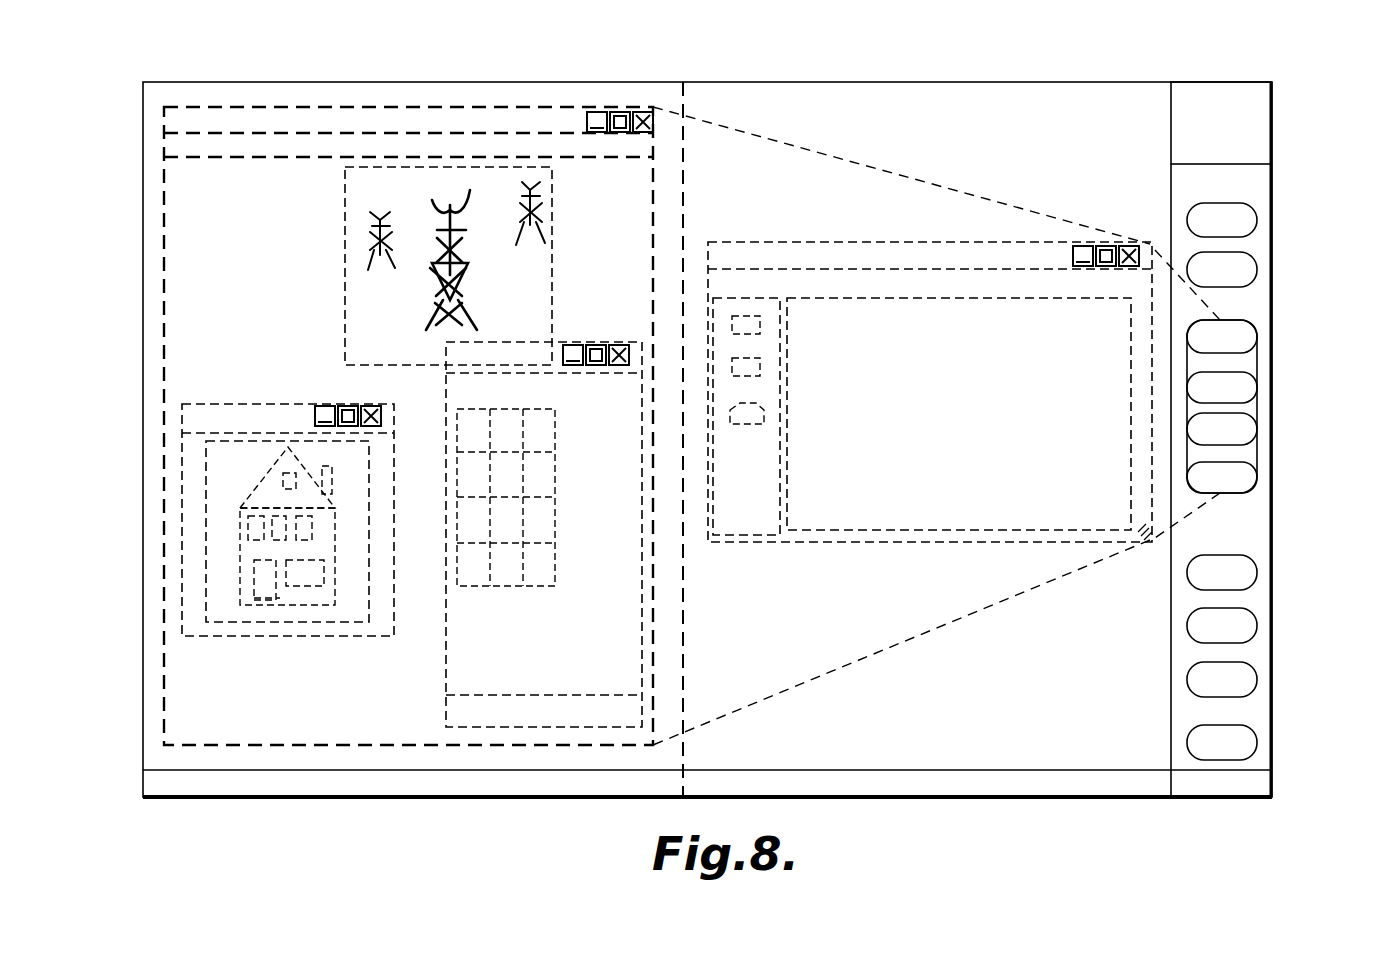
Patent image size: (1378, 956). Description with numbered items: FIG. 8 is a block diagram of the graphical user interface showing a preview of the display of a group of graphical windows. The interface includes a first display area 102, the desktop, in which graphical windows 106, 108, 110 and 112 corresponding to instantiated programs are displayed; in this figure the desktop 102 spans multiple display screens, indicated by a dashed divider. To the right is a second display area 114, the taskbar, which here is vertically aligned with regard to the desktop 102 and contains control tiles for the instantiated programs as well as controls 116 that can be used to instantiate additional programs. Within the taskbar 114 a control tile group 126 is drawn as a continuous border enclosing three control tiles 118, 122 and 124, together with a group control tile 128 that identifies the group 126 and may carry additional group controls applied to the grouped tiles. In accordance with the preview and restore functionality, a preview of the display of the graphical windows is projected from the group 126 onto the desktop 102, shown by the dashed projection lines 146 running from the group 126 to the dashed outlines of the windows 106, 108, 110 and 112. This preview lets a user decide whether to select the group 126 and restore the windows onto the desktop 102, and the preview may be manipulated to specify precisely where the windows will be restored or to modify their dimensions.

The first display area 102 is at (178, 95).
The graphical window 106 is at (226, 202).
The graphical window 108 is at (280, 640).
The graphical window 110 is at (562, 688).
The graphical window 112 is at (948, 415).
The second display area 114 is at (1242, 120).
The controls 116 is at (1222, 742).
The control tile 118 is at (1222, 387).
The control tile 122 is at (1222, 429).
The control tile 124 is at (1222, 477).
The control tile group 126 is at (1258, 363).
The group control tile 128 is at (1222, 336).
The window movement indication 146 is at (900, 176).